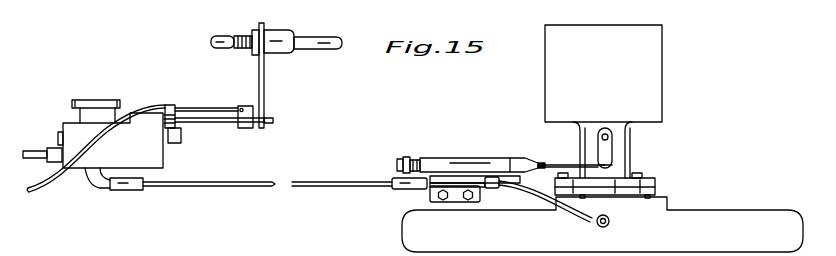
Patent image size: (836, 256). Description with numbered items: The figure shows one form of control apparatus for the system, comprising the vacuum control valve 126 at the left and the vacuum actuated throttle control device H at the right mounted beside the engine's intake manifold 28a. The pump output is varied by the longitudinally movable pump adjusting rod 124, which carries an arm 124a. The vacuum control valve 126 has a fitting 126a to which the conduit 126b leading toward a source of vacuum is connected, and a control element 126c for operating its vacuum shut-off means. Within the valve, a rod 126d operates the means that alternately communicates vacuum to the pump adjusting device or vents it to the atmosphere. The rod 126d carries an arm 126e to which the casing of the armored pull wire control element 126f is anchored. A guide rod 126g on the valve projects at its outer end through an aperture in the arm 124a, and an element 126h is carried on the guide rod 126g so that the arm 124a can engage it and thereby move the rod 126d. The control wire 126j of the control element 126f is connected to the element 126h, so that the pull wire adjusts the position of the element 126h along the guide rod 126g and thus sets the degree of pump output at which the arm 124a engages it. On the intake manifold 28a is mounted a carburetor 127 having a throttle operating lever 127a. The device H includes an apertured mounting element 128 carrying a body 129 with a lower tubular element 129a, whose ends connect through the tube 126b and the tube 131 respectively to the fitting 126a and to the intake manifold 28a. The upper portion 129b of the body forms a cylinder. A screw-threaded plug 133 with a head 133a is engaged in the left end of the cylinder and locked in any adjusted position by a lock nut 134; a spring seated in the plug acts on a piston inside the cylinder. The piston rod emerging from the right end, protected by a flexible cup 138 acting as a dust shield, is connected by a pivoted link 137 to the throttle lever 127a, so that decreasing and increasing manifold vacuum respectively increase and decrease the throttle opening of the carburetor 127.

The pump adjusting rod 124 is at (254, 34).
The arm 124a is at (264, 77).
The vacuum control valve 126 is at (147, 156).
The fitting 126a is at (100, 188).
The conduit 126b is at (233, 187).
The control element 126c is at (32, 150).
The rod 126d is at (172, 143).
The arm 126e is at (168, 105).
The armored pull wire control element 126f is at (140, 110).
The guide rod 126g is at (228, 123).
The element 126h is at (264, 108).
The control wire 126j is at (241, 106).
The carburetor 127 is at (647, 70).
The throttle operating lever 127a is at (612, 143).
The mounting element 128 is at (430, 197).
The body 129 is at (507, 183).
The lower tubular element 129a is at (485, 188).
The upper portion 129b is at (490, 157).
The tube 131 is at (582, 222).
The plug 133 is at (406, 157).
The head 133a is at (400, 162).
The lock nut 134 is at (418, 160).
The link 137 is at (570, 158).
The flexible cup 138 is at (517, 158).
The intake manifold 28a is at (690, 218).
The vacuum actuated device H is at (475, 149).